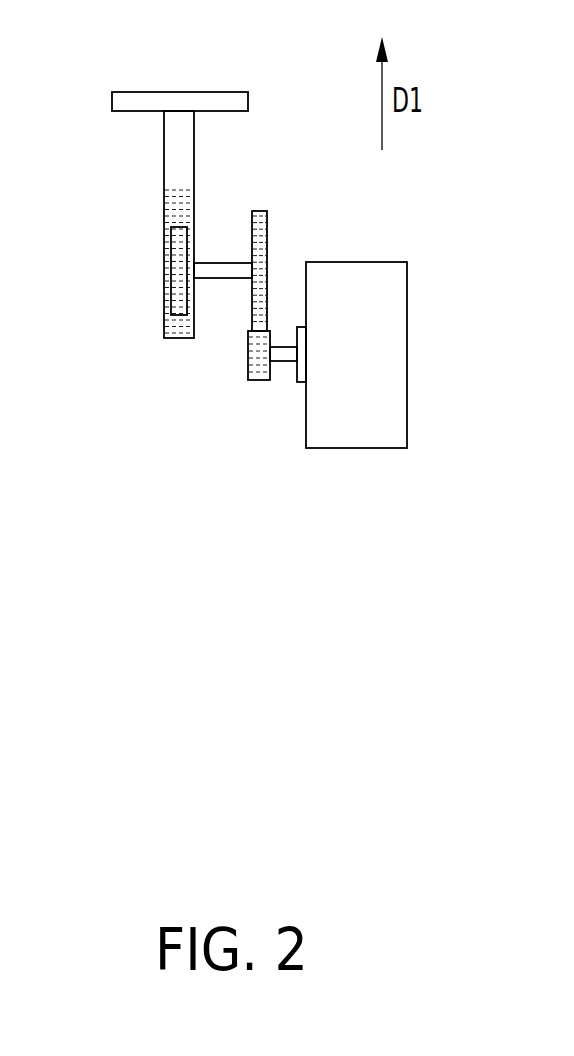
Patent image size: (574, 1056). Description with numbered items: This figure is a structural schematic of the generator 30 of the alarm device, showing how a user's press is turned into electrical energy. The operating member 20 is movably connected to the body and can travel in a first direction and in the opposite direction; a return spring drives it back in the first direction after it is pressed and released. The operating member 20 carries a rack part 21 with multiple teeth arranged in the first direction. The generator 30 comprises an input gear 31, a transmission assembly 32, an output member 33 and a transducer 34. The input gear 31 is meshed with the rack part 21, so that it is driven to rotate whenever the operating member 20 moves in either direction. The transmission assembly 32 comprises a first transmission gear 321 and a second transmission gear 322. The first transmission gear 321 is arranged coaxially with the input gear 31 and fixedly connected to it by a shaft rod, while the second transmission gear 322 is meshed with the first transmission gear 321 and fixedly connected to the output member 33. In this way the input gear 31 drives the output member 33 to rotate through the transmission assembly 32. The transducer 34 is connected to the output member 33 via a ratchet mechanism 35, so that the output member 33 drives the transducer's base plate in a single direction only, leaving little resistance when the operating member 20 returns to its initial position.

The operating member 20 is at (178, 100).
The rack part 21 is at (166, 208).
The generator 30 is at (183, 442).
The input gear 31 is at (166, 253).
The transmission assembly 32 is at (279, 187).
The first transmission gear 321 is at (263, 251).
The second transmission gear 322 is at (255, 356).
The output member 33 is at (291, 357).
The transducer 34 is at (374, 373).
The ratchet mechanism 35 is at (298, 384).